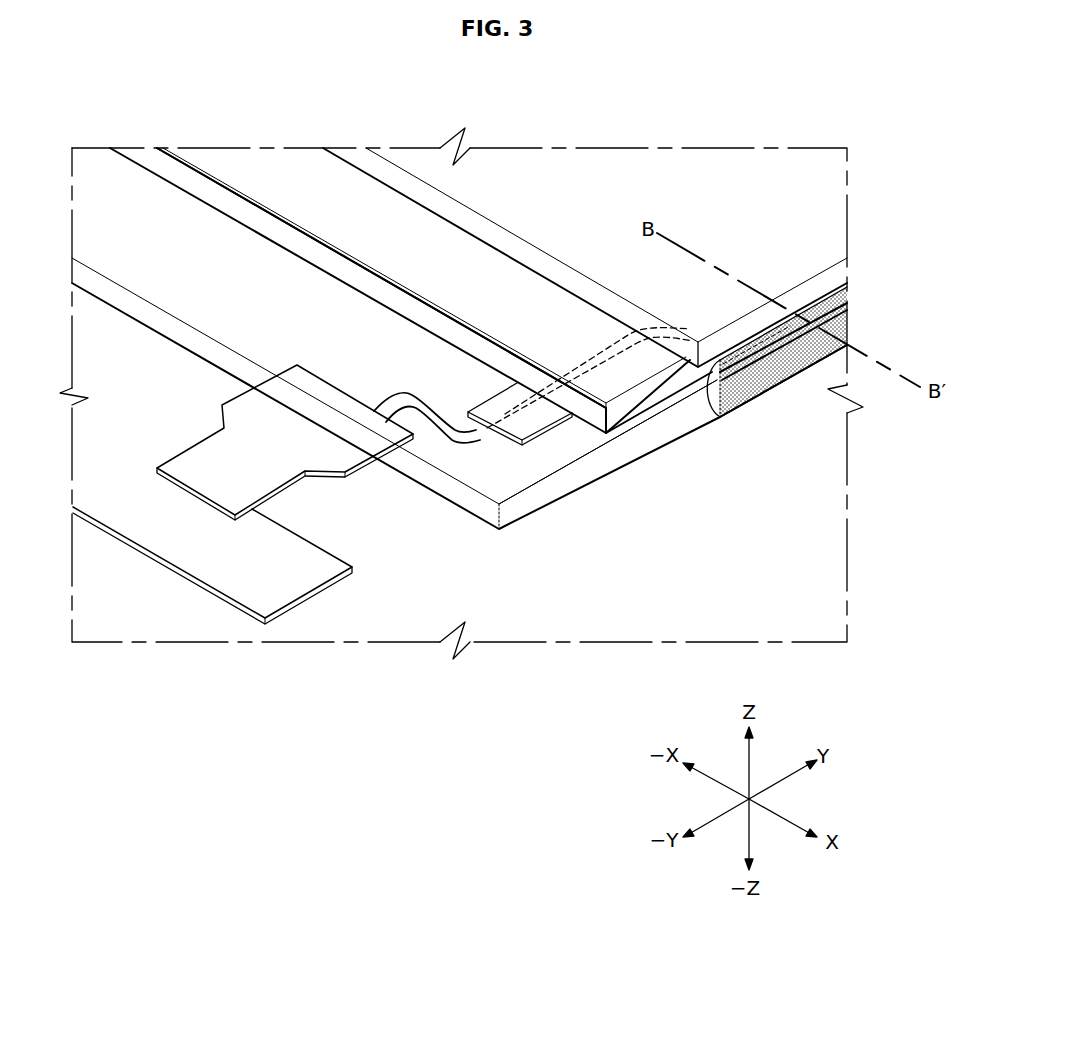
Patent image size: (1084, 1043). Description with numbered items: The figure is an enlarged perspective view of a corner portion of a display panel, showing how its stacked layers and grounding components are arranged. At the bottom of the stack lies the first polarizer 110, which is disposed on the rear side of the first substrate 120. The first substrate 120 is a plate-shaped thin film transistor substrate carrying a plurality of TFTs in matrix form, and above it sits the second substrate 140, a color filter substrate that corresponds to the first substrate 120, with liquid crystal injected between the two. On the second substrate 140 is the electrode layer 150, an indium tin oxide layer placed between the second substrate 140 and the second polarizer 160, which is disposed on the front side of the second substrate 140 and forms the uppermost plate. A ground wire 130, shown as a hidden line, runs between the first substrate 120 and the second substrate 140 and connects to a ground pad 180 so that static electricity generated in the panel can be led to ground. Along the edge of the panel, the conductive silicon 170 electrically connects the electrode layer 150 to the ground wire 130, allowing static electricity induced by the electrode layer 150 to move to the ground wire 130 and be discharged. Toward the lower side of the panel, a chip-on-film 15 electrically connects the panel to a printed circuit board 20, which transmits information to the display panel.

The chip-on-film 15 is at (340, 462).
The printed circuit board 20 is at (297, 585).
The first polarizer 110 is at (742, 400).
The first substrate 120 is at (592, 463).
The ground wire 130 is at (600, 376).
The second substrate 140 is at (398, 298).
The electrode layer 150 is at (353, 233).
The second polarizer 160 is at (724, 166).
The conductive silicon 170 is at (838, 318).
The ground pad 180 is at (528, 438).